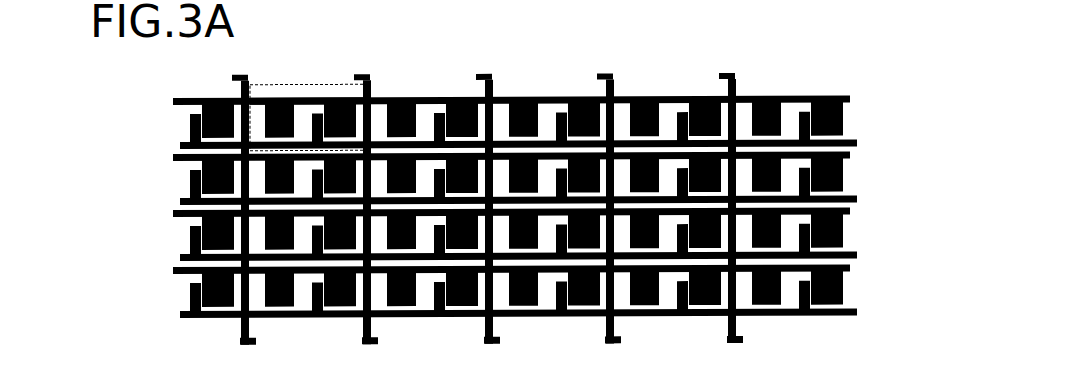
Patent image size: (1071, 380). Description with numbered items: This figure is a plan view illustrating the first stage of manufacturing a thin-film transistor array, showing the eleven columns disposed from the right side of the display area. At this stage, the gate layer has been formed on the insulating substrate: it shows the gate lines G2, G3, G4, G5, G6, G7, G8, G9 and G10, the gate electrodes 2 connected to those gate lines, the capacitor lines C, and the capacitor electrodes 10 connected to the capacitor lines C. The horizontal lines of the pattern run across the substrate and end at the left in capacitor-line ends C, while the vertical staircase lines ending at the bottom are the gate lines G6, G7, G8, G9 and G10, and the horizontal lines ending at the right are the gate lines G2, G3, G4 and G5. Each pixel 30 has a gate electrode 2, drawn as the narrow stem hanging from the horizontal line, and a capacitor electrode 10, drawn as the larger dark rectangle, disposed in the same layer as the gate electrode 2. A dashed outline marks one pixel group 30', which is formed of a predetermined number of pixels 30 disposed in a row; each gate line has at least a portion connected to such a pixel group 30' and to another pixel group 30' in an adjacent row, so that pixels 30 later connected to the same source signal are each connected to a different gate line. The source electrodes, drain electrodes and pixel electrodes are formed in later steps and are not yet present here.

The capacitor electrode 10 is at (528, 210).
The gate electrode 2 is at (183, 303).
The pixel 30 is at (308, 75).
The pixel group 30' is at (308, 98).
The capacitor line C is at (233, 76).
The gate line G2 is at (873, 143).
The gate line G3 is at (874, 199).
The gate line G4 is at (874, 257).
The gate line G5 is at (876, 313).
The gate line G6 is at (744, 341).
The gate line G7 is at (622, 341).
The gate line G8 is at (501, 341).
The gate line G9 is at (379, 341).
The gate line G10 is at (258, 343).